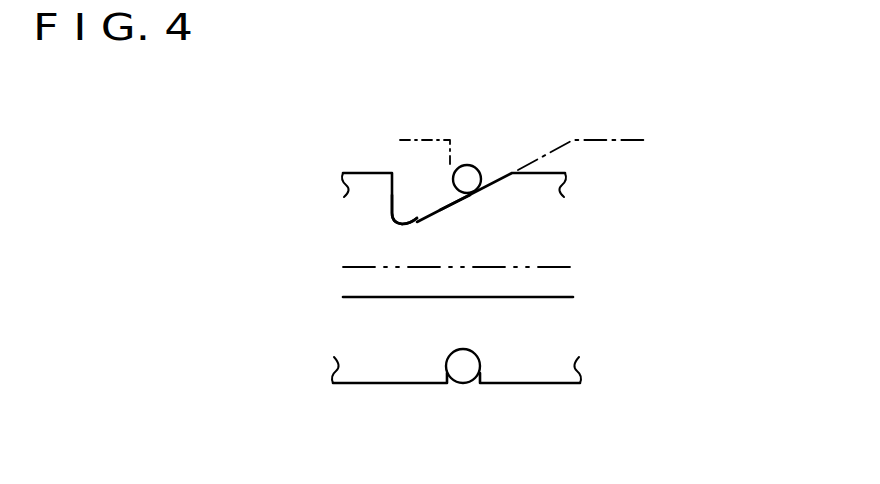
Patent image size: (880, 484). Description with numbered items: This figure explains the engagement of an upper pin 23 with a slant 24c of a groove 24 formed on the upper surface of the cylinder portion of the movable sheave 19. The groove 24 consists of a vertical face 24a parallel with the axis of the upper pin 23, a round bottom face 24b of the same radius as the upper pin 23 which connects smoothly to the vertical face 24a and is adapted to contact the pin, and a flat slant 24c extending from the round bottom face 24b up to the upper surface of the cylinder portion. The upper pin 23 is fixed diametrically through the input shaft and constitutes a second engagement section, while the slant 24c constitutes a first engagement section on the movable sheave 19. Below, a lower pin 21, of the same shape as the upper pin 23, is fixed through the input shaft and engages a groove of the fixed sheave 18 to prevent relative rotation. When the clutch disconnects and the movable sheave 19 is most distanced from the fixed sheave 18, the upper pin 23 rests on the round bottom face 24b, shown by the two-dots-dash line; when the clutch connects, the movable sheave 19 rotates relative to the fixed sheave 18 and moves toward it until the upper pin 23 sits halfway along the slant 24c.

The fixed sheave 18 is at (552, 358).
The movable sheave 19 is at (573, 249).
The lower pin 21 is at (463, 373).
The upper pin 23 is at (467, 173).
The groove 24 is at (417, 178).
The vertical face 24a is at (395, 190).
The round bottom face 24b is at (400, 219).
The slant 24c is at (440, 209).